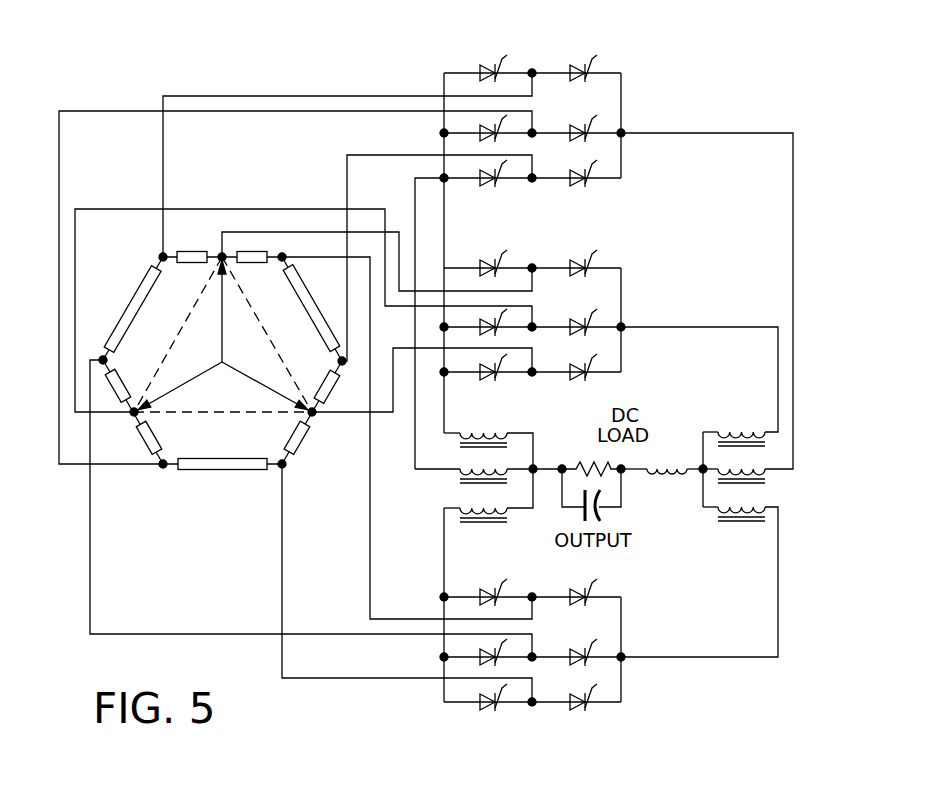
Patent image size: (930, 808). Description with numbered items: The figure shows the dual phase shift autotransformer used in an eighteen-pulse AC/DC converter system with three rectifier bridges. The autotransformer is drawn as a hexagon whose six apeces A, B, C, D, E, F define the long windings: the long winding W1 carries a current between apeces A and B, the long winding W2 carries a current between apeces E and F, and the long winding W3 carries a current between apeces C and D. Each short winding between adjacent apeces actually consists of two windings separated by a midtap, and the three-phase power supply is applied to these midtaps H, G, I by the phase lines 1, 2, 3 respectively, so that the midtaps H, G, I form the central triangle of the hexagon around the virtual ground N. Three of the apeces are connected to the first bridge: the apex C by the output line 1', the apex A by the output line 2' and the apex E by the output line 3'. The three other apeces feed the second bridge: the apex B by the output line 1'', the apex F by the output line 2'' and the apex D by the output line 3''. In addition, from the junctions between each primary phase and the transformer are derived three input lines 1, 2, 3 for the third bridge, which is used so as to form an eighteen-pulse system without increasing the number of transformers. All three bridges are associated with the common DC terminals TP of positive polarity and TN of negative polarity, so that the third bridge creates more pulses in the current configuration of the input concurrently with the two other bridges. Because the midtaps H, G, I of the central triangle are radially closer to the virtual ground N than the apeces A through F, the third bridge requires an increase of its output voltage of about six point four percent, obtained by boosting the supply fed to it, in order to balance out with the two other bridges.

The phase line 1 is at (434, 393).
The phase line 2 is at (318, 325).
The phase line 3 is at (378, 257).
The output line 1' is at (437, 244).
The output line 2' is at (295, 287).
The output line 3' is at (347, 161).
The output line 1'' is at (407, 583).
The output line 2'' is at (311, 508).
The output line 3'' is at (407, 438).
The long winding W1 is at (222, 479).
The long winding W2 is at (129, 309).
The long winding W3 is at (314, 308).
The apex A is at (165, 476).
The apex B is at (291, 473).
The apex C is at (349, 373).
The apex D is at (291, 253).
The apex E is at (153, 253).
The apex F is at (96, 352).
The virtual ground N is at (223, 336).
The midtap G is at (180, 387).
The midtap H is at (222, 362).
The midtap I is at (218, 311).
The DC terminal TN is at (533, 469).
The DC terminal TP is at (703, 469).